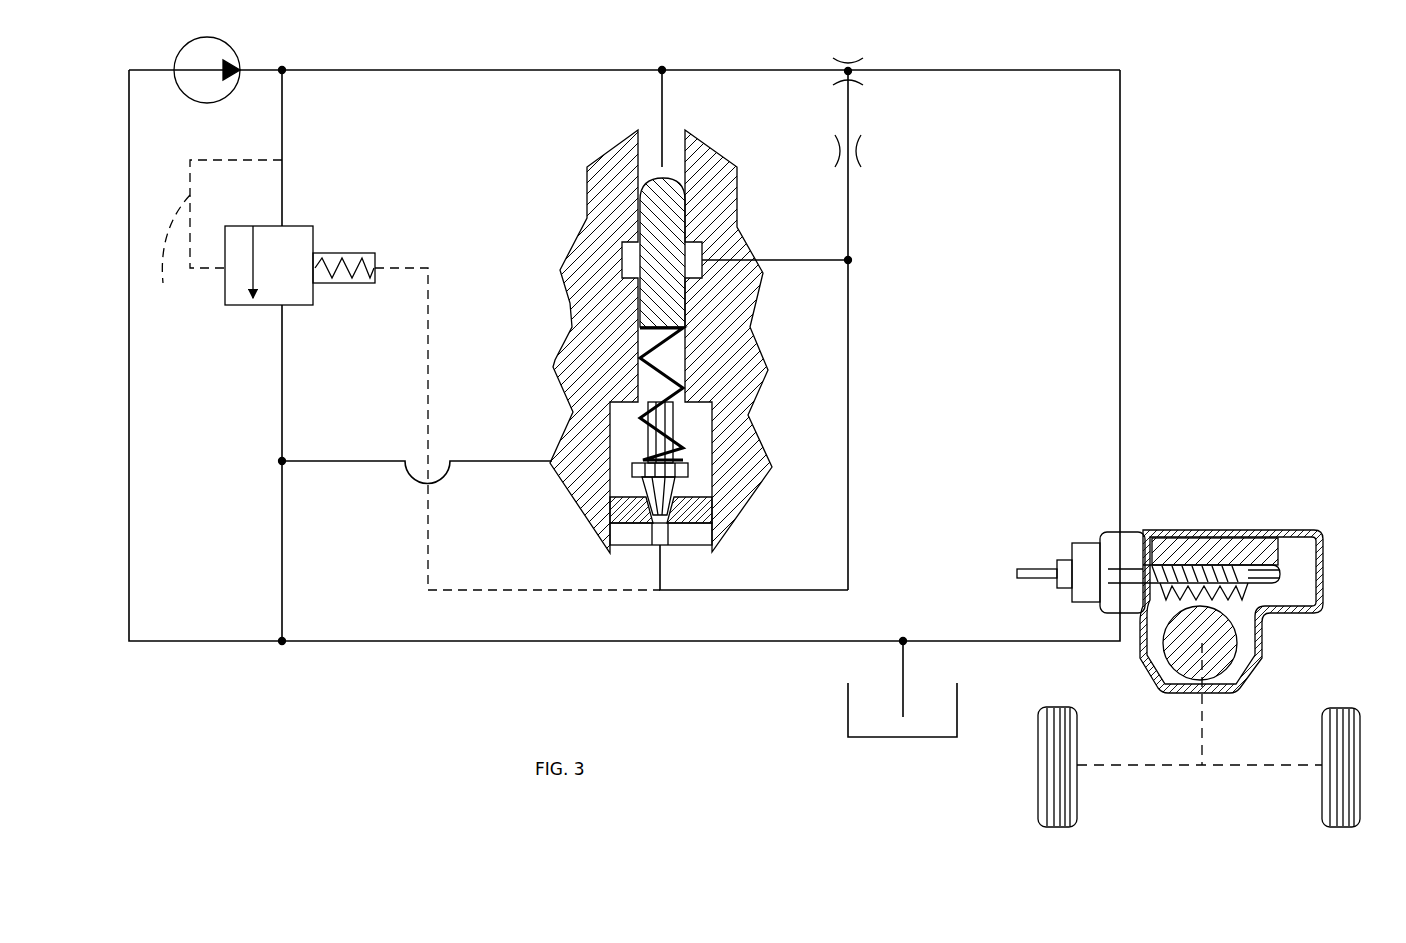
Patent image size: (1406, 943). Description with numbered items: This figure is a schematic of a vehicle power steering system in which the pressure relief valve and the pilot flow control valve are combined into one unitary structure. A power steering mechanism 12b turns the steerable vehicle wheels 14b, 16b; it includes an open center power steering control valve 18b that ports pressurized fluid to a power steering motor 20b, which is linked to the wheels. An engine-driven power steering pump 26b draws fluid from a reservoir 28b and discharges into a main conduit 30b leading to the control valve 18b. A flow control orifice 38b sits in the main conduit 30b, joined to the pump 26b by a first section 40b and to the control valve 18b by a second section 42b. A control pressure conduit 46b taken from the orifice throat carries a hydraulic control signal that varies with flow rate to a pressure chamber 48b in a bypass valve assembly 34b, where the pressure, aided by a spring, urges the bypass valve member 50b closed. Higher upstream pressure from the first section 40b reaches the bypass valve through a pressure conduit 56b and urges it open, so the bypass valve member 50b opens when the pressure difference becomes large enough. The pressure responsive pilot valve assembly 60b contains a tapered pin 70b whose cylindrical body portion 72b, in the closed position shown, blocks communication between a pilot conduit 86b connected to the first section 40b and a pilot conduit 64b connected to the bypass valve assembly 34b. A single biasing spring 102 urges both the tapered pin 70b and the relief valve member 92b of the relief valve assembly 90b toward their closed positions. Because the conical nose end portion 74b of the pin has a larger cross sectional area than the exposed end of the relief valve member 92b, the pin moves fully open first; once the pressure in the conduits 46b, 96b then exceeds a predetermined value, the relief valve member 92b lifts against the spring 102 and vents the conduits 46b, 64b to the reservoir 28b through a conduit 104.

The power steering mechanism 12b is at (1200, 587).
The steerable vehicle wheel 14b is at (1050, 790).
The steerable vehicle wheel 16b is at (1340, 784).
The power steering control valve 18b is at (1098, 545).
The power steering motor 20b is at (1300, 560).
The power steering pump 26b is at (207, 58).
The reservoir 28b is at (865, 708).
The main conduit 30b is at (1132, 134).
The bypass valve assembly 34b is at (401, 355).
The flow control orifice 38b is at (848, 62).
The first section of the main conduit 40b is at (460, 70).
The second section of the main conduit 42b is at (950, 72).
The control pressure conduit 46b is at (848, 385).
The pressure chamber 48b is at (338, 282).
The bypass valve member 50b is at (292, 242).
The pressure conduit 56b is at (246, 320).
The pilot valve assembly 60b is at (636, 220).
The pilot conduit 64b is at (797, 258).
The tapered pin 70b is at (657, 250).
The cylindrical body portion 72b is at (676, 298).
The conical nose end portion 74b is at (665, 222).
The pilot conduit 86b is at (662, 92).
The relief valve assembly 90b is at (719, 507).
The relief valve member 92b is at (688, 466).
The conduit 96b is at (662, 575).
The biasing spring 102 is at (638, 372).
The conduit 104 is at (345, 462).